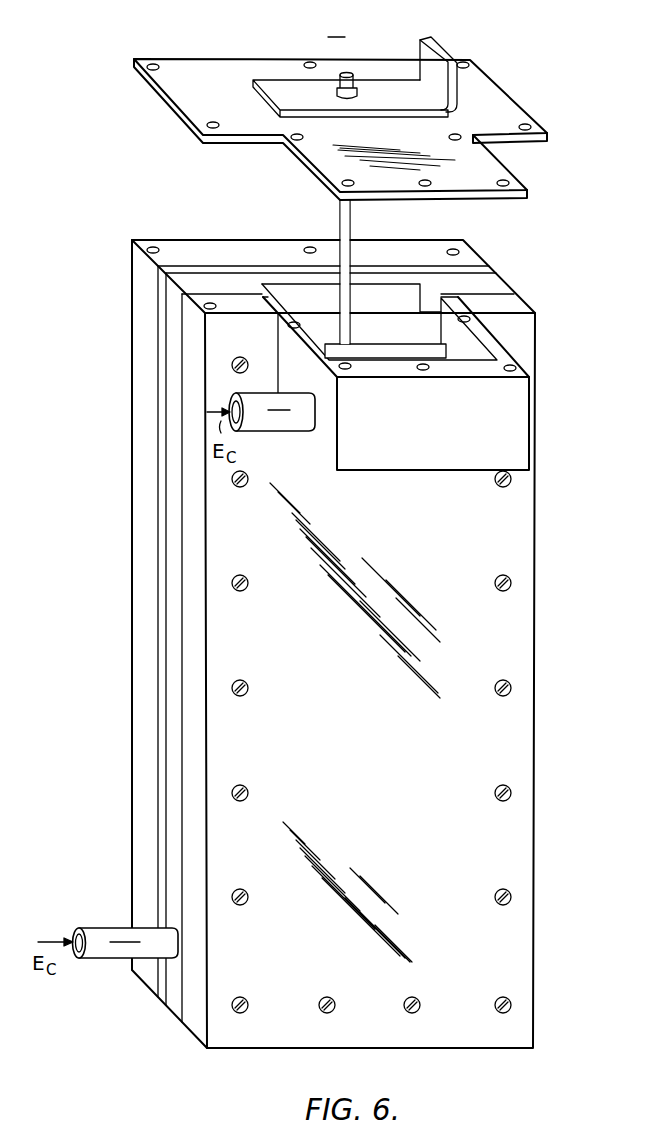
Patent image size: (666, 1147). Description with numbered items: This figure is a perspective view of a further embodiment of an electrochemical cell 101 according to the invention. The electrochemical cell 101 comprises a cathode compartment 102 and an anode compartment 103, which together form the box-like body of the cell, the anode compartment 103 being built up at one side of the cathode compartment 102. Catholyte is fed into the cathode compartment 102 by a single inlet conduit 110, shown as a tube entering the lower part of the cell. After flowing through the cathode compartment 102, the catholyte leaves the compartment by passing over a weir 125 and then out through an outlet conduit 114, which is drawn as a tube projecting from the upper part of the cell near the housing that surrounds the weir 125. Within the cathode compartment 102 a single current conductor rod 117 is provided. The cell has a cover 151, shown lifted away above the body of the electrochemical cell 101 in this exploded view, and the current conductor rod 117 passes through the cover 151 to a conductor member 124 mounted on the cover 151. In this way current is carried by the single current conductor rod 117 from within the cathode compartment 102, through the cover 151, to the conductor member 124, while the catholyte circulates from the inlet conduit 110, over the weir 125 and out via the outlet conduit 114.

The electrochemical cell 101 is at (335, 644).
The cathode compartment 102 is at (348, 759).
The anode compartment 103 is at (141, 771).
The inlet conduit 110 is at (102, 949).
The outlet conduit 114 is at (278, 419).
The current conductor rod 117 is at (339, 215).
The conductor member 124 is at (421, 54).
The weir 125 is at (395, 349).
The cover 151 is at (340, 104).